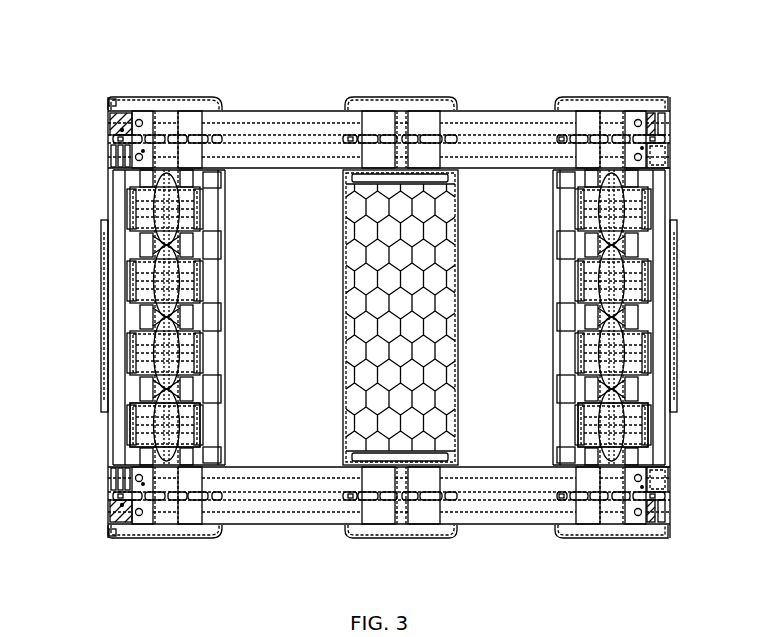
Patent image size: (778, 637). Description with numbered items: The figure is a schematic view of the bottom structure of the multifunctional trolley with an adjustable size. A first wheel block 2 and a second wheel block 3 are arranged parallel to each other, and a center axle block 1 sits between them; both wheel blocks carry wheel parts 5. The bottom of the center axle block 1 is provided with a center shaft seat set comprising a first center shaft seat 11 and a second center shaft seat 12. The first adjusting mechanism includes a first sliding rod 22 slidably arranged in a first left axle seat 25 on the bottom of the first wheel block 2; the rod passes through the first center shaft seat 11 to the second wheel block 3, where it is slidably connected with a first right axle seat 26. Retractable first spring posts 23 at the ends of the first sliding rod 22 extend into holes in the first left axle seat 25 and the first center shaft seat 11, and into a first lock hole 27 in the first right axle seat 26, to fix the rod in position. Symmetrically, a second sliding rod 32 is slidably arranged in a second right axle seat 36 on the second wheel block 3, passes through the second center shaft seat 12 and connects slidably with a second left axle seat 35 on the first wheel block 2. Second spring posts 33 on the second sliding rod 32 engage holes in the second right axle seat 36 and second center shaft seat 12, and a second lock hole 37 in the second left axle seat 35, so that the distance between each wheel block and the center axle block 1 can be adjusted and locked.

The center axle block 1 is at (401, 235).
The first wheel block 2 is at (128, 317).
The second wheel block 3 is at (647, 317).
The wheel parts 5 is at (212, 435).
The first center shaft seat 11 is at (423, 122).
The second center shaft seat 12 is at (382, 155).
The first sliding rod 22 is at (110, 145).
The first spring post 23 is at (107, 105).
The first left axle seat 25 is at (143, 117).
The first right axle seat 26 is at (632, 113).
The first lock hole 27 is at (668, 113).
The second sliding rod 32 is at (543, 152).
The second spring post 33 is at (641, 158).
The second left axle seat 35 is at (140, 167).
The second right axle seat 36 is at (641, 125).
The second lock hole 37 is at (140, 158).